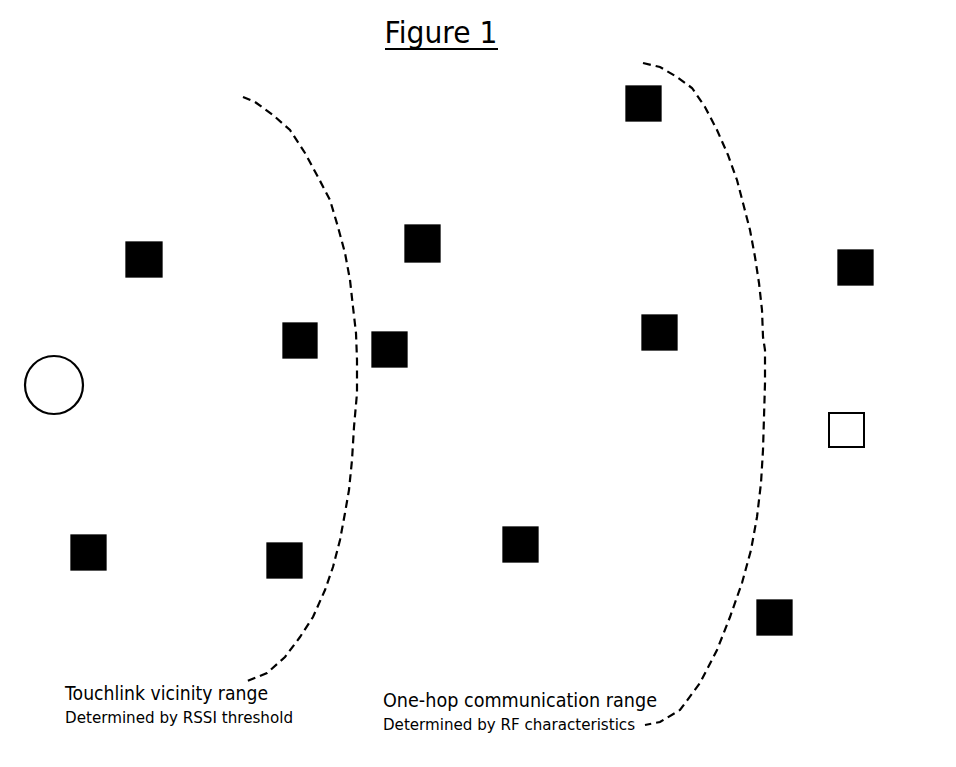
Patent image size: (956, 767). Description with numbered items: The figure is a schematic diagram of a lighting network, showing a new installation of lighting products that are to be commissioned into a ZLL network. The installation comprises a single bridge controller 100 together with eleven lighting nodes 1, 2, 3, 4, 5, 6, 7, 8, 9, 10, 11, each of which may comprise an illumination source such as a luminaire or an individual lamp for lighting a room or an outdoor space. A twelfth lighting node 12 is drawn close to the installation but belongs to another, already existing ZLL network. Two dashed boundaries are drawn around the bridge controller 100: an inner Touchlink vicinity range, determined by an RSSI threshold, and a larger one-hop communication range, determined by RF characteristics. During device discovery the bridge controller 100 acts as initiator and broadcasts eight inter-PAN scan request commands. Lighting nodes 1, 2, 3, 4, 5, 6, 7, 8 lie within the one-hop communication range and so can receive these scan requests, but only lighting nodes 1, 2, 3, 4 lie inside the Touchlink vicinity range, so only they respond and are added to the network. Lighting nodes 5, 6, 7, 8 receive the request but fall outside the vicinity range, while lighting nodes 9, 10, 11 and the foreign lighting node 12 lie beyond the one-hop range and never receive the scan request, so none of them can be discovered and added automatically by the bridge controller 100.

The bridge controller 100 is at (54, 418).
The lighting node 1 is at (144, 259).
The lighting node 2 is at (300, 340).
The lighting node 3 is at (284, 560).
The lighting node 4 is at (88, 552).
The lighting node 5 is at (389, 349).
The lighting node 6 is at (422, 243).
The lighting node 7 is at (520, 544).
The lighting node 8 is at (659, 332).
The lighting node 9 is at (643, 103).
The lighting node 10 is at (774, 617).
The lighting node 11 is at (855, 267).
The twelfth lighting node 12 is at (846, 430).